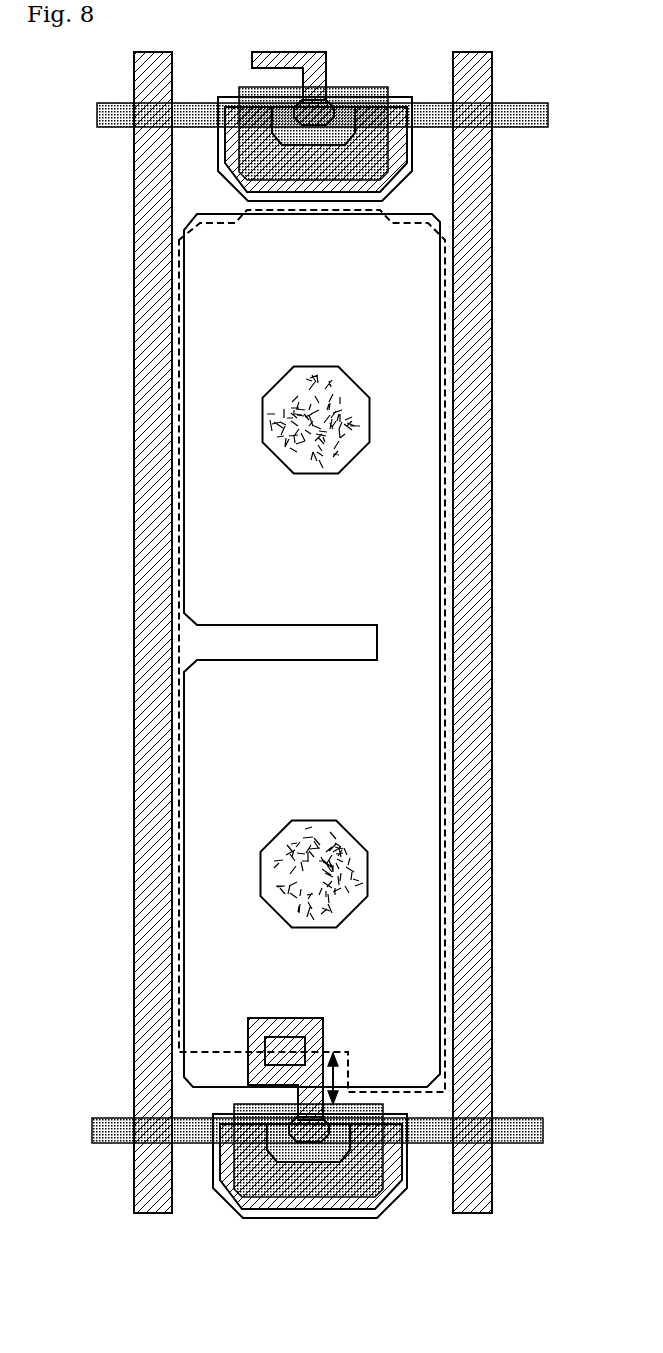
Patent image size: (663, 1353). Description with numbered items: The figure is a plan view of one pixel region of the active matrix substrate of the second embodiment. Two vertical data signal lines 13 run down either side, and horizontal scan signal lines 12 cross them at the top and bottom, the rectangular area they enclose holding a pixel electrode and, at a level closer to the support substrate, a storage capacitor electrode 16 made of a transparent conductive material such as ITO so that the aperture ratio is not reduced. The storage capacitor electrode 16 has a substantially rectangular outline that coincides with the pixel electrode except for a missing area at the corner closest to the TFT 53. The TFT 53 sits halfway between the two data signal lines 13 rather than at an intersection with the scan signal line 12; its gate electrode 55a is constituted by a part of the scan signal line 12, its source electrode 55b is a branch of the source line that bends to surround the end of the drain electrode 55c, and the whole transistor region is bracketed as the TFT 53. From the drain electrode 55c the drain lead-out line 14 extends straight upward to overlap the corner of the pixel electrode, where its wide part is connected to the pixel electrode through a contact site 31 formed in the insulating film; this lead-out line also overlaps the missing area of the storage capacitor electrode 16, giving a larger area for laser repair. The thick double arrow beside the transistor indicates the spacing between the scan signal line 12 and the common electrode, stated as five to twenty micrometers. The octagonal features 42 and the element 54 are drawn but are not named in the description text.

The scan signal line 12 is at (95, 1130).
The data signal line 13 is at (152, 960).
The drain lead-out line 14 is at (298, 1094).
The storage capacitor electrode 16 is at (178, 874).
The contact site 31 is at (270, 1040).
The spacer 42 is at (283, 421).
The TFT 53 is at (216, 1174).
The source electrode 54 is at (257, 1210).
The gate electrode 55a is at (345, 1185).
The source electrode 55b is at (236, 1196).
The drain electrode 55c is at (310, 1132).